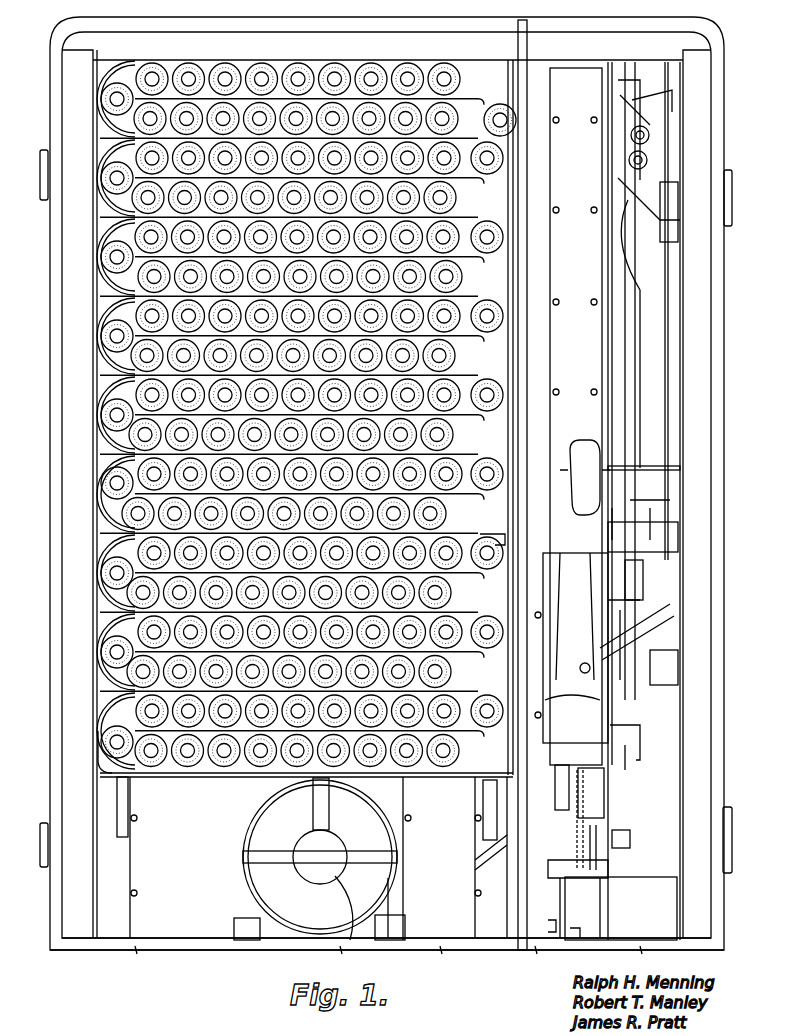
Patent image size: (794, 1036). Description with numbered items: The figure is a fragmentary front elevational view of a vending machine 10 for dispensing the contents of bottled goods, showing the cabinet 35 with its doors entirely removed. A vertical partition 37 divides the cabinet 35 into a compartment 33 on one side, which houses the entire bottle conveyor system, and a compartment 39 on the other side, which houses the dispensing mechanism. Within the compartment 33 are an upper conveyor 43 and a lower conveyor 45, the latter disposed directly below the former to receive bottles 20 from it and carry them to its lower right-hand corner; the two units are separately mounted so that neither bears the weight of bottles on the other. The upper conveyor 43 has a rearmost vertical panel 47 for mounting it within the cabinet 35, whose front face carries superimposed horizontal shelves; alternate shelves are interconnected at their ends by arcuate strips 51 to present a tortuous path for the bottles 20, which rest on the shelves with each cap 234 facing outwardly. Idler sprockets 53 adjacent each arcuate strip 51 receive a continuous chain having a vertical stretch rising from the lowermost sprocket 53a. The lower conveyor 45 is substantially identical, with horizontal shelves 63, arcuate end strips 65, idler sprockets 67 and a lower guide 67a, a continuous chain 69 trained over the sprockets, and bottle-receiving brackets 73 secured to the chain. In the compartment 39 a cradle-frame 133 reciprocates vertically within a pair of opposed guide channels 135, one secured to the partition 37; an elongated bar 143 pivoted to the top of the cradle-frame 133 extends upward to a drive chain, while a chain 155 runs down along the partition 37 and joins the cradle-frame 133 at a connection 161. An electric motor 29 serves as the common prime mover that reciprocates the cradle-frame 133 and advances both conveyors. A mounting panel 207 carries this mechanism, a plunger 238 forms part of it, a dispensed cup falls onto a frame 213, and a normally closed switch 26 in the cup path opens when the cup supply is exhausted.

The vending machine cabinet 10 is at (386, 485).
The bottle 20 is at (310, 72).
The normally closed switch 26 is at (660, 512).
The electric motor 29 is at (672, 225).
The compartment 33 is at (300, 858).
The cabinet 35 is at (70, 478).
The vertical partition 37 is at (528, 44).
The compartment 39 is at (621, 881).
The upper conveyor 43 is at (95, 323).
The lower conveyor 45 is at (100, 655).
The vertical panel 47 is at (113, 240).
The arcuate strip 51 is at (100, 262).
The idler sprocket 53 is at (510, 405).
The lowermost sprocket 53a is at (130, 78).
The shelf 63 is at (110, 700).
The arcuate end strip 65 is at (100, 748).
The idler sprocket 67 is at (104, 635).
The lower guide rail 67a is at (472, 857).
The continuous chain 69 is at (497, 548).
The bottle-receiving bracket 73 is at (168, 768).
The cradle-frame 133 is at (578, 785).
The guide channel 135 is at (562, 750).
The elongated bar 143 is at (573, 570).
The chain 155 is at (580, 868).
The connection of chain to cradle-frame 161 is at (575, 772).
The mounting panel 207 is at (576, 416).
The frame 213 is at (668, 600).
The cap 234 is at (262, 78).
The plunger 238 is at (580, 400).